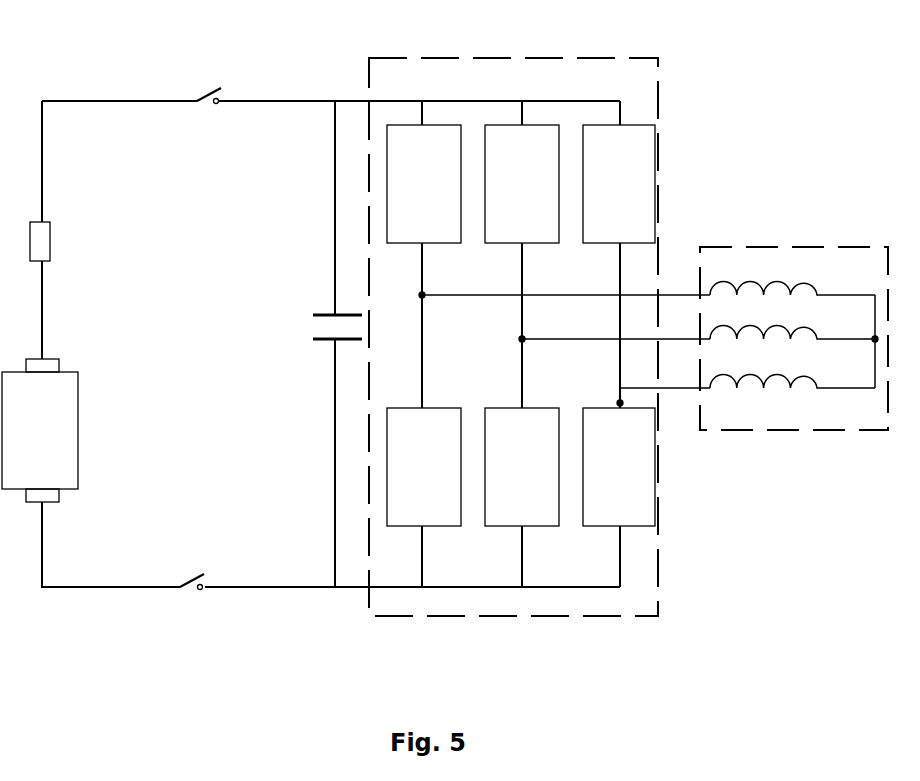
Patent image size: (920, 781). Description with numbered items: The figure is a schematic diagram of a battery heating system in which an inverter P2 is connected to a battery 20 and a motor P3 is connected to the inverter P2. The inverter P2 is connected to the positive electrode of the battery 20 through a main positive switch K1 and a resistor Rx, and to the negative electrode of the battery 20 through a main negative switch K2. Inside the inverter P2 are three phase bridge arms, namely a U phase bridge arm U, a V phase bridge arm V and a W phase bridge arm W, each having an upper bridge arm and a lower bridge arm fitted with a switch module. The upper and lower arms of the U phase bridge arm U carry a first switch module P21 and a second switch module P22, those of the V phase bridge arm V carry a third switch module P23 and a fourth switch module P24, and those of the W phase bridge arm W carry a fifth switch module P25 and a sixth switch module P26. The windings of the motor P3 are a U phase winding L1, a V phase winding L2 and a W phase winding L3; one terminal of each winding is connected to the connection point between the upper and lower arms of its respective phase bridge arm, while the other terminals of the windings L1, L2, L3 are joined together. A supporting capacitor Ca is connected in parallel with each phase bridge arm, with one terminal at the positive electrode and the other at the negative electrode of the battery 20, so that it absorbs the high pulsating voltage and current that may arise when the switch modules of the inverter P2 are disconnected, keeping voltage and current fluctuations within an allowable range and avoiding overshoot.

The main positive switch K1 is at (205, 86).
The main negative switch K2 is at (193, 569).
The resistor Rx is at (52, 241).
The battery 20 is at (40, 431).
The supporting capacitor Ca is at (318, 327).
The inverter P2 is at (443, 57).
The first switch module P21 is at (424, 184).
The second switch module P22 is at (424, 467).
The third switch module P23 is at (522, 184).
The fourth switch module P24 is at (522, 467).
The fifth switch module P25 is at (619, 184).
The sixth switch module P26 is at (619, 467).
The U phase bridge arm U is at (542, 306).
The V phase bridge arm V is at (591, 323).
The W phase bridge arm W is at (640, 341).
The motor P3 is at (795, 246).
The U phase winding L1 is at (792, 277).
The V phase winding L2 is at (792, 322).
The W phase winding L3 is at (792, 370).